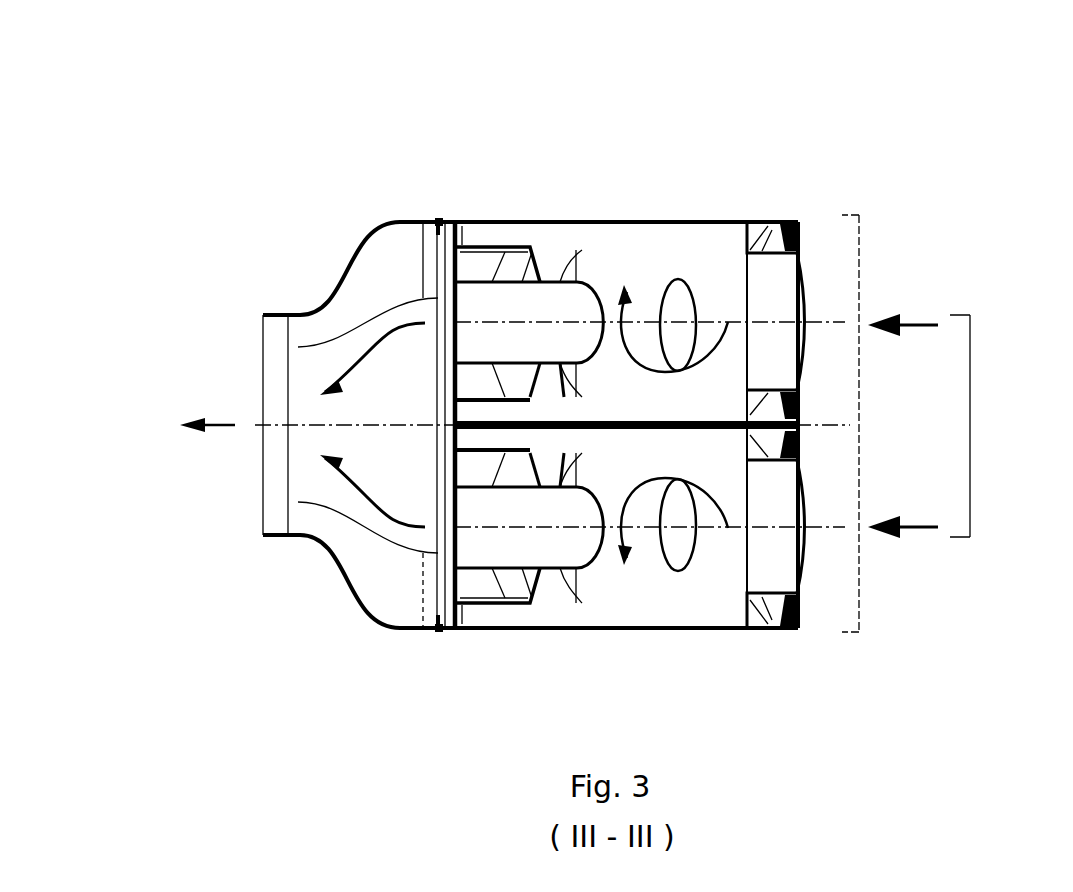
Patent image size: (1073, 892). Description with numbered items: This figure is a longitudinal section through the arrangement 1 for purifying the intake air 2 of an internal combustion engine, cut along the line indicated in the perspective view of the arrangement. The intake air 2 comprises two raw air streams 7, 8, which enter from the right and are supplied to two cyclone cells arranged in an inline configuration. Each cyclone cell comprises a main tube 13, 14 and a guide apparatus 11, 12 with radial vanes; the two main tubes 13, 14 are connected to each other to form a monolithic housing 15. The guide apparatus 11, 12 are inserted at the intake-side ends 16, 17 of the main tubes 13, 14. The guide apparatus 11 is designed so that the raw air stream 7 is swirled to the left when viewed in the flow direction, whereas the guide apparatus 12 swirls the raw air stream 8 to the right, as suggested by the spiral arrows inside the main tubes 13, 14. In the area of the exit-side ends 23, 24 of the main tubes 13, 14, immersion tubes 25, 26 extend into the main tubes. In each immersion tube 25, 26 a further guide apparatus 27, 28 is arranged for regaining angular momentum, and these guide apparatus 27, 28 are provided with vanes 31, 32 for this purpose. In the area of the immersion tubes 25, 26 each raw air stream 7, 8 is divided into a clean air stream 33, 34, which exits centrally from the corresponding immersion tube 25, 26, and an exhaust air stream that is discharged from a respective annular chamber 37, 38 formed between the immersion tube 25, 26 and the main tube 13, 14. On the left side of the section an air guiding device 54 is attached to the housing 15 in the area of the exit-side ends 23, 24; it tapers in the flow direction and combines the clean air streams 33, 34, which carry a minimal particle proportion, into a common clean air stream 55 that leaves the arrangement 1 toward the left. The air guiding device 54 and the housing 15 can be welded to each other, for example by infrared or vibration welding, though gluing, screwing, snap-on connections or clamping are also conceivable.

The arrangement 1 is at (895, 188).
The intake air 2 is at (970, 428).
The raw air stream 7 is at (917, 530).
The raw air stream 8 is at (917, 323).
The guide apparatus 11 is at (783, 505).
The guide apparatus 12 is at (785, 292).
The main tube 13 is at (645, 632).
The main tube 14 is at (645, 222).
The housing 15 is at (859, 428).
The intake-side end 16 is at (775, 632).
The intake-side end 17 is at (775, 222).
The exit-side end 23 is at (455, 628).
The exit-side end 24 is at (455, 235).
The immersion tube 25 is at (500, 607).
The immersion tube 26 is at (500, 268).
The guide apparatus 27 is at (563, 575).
The guide apparatus 28 is at (562, 295).
The vanes 31 is at (535, 608).
The vanes 32 is at (525, 270).
The clean air stream 33 is at (373, 490).
The clean air stream 34 is at (373, 360).
The annular chamber 37 is at (470, 630).
The annular chamber 38 is at (470, 240).
The air guiding device 54 is at (355, 275).
The common clean air stream 55 is at (222, 420).